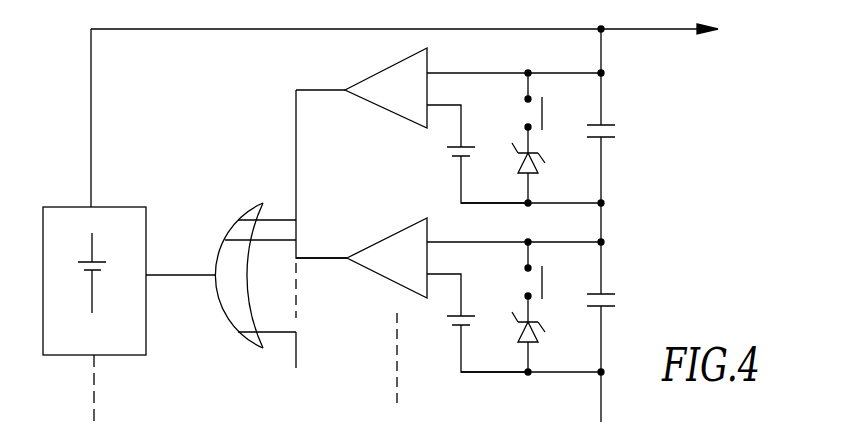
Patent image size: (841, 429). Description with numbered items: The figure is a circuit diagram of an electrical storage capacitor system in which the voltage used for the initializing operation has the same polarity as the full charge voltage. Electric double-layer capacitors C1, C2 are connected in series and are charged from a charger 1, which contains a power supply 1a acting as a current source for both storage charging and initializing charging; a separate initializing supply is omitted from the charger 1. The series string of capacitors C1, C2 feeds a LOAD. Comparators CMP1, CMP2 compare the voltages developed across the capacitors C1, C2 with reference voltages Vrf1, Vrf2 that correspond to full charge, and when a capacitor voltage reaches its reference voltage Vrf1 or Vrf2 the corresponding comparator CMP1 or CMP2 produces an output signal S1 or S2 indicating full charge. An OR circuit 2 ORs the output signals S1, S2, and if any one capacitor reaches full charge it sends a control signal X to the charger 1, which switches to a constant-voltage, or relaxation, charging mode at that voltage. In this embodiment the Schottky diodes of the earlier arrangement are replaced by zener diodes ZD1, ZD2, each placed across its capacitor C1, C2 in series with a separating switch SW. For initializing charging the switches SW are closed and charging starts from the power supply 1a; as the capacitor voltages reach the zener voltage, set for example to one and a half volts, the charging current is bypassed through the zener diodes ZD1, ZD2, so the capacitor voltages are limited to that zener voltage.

The charger 1 is at (108, 207).
The battery cell 1a is at (104, 270).
The OR circuit 2 is at (219, 253).
The control signal X is at (180, 290).
The output signal S1 is at (320, 75).
The output signal S2 is at (321, 240).
The comparator CMP1 is at (386, 88).
The comparator CMP2 is at (387, 258).
The reference voltage Vrf1 is at (474, 150).
The reference voltage Vrf2 is at (474, 319).
The separating switch SW is at (521, 112).
The zener diode ZD1 is at (538, 189).
The zener diode ZD2 is at (538, 358).
The electric double-layer capacitor C1 is at (617, 128).
The electric double-layer capacitor C2 is at (617, 297).
The load LOAD is at (404, 42).